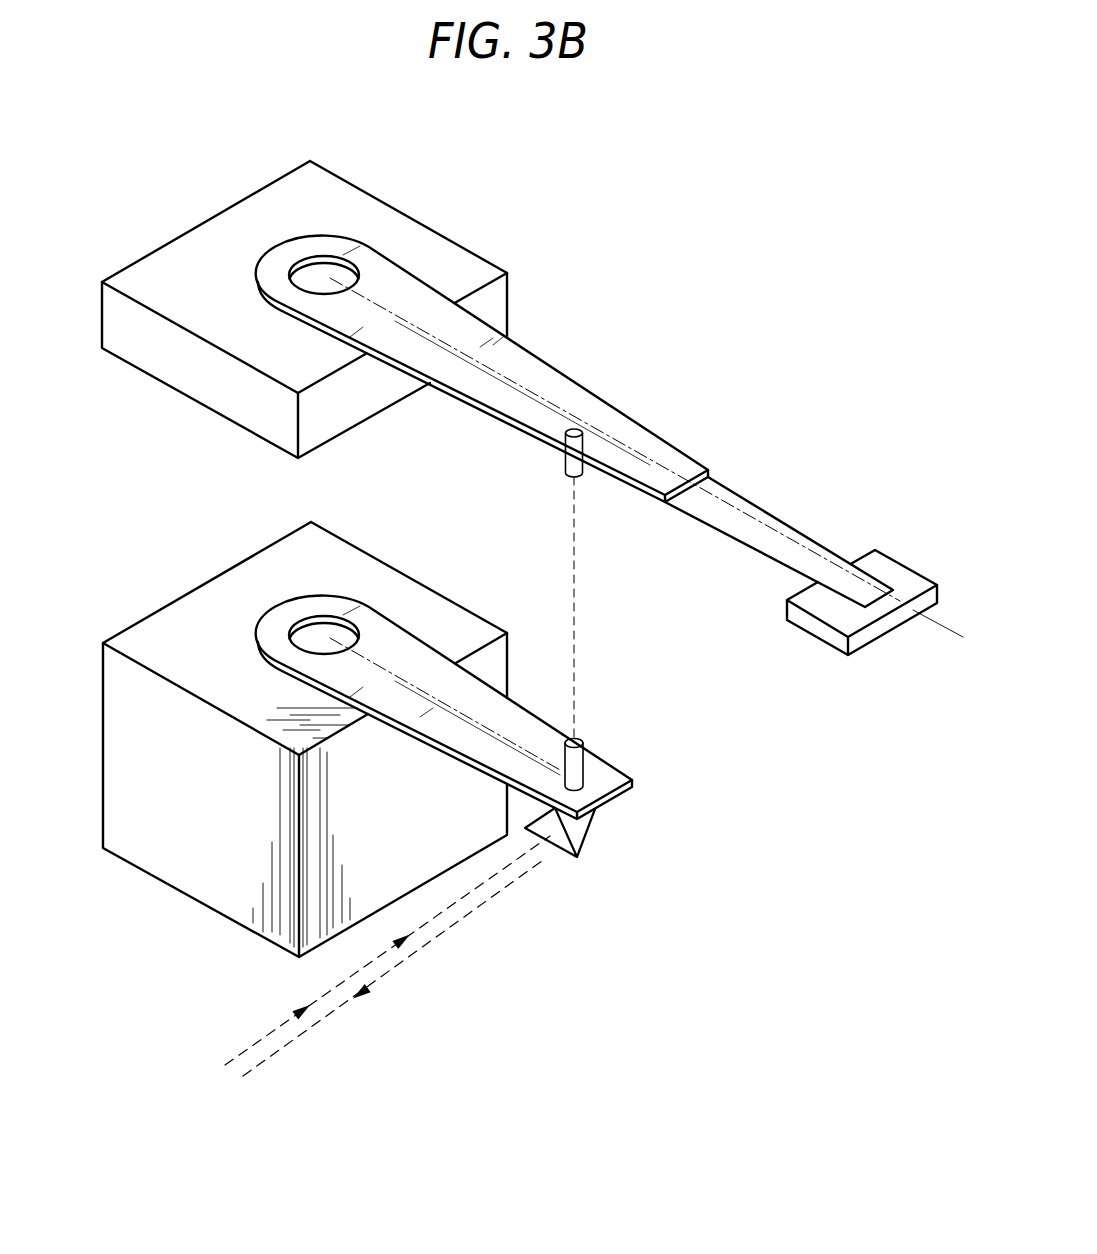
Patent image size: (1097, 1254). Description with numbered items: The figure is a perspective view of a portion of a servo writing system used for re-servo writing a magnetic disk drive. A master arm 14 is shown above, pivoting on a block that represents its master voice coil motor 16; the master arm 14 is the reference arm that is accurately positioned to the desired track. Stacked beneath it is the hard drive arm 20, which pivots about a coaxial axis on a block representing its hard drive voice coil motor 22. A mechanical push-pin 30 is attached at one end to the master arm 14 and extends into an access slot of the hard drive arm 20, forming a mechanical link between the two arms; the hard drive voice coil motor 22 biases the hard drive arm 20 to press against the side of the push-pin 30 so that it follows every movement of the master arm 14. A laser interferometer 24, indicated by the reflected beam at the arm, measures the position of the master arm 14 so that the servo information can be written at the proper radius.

The hard drive voice coil motor 22 is at (157, 262).
The hard drive arm 20 is at (515, 357).
The master voice coil motor 16 is at (147, 630).
The master arm 14 is at (458, 745).
The mechanical push-pin 30 is at (583, 762).
The laser interferometer 24 is at (558, 845).